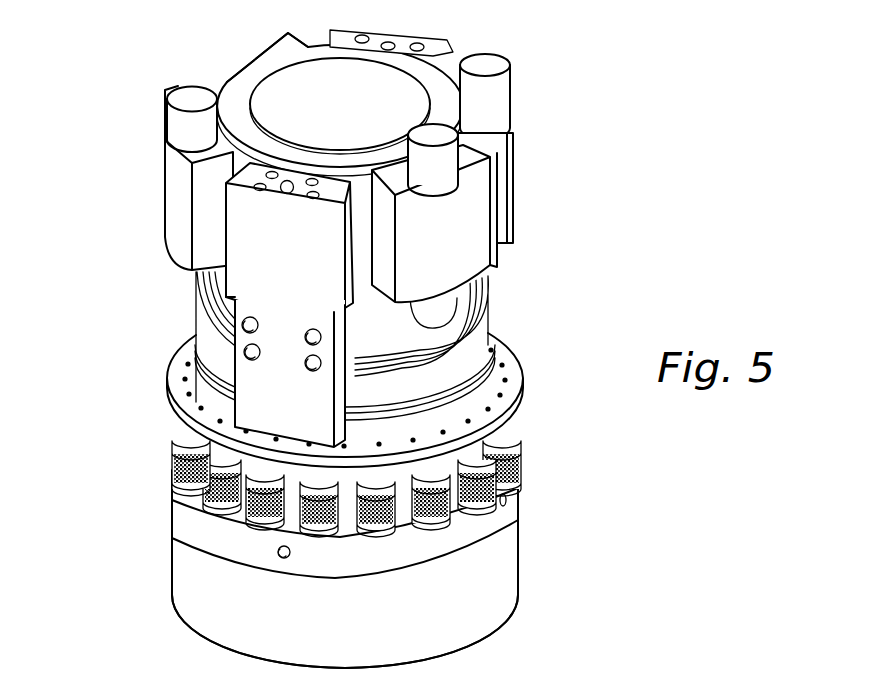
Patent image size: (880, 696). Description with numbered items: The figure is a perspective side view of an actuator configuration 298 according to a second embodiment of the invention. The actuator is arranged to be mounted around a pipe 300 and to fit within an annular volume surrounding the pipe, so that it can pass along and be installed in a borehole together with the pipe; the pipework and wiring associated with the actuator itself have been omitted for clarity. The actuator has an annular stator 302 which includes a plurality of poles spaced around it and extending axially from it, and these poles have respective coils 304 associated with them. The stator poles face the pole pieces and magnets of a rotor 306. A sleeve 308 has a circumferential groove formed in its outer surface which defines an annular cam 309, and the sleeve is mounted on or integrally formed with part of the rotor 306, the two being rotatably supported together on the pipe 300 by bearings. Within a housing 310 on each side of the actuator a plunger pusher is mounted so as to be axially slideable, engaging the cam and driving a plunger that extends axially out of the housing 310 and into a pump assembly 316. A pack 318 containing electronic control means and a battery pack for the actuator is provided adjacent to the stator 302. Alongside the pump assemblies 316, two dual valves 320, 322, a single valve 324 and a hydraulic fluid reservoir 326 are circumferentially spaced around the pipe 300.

The actuator configuration 298 is at (275, 610).
The pipe 300 is at (308, 45).
The annular stator 302 is at (396, 523).
The coils 304 is at (392, 489).
The rotor 306 is at (387, 400).
The sleeve 308 is at (405, 337).
The annular cam 309 is at (405, 382).
The housing 310 is at (218, 372).
The pump assembly 316 is at (450, 40).
The pack 318 is at (393, 569).
The dual valve 320 is at (537, 148).
The dual valve 322 is at (490, 223).
The single valve 324 is at (154, 178).
The hydraulic fluid reservoir 326 is at (213, 57).